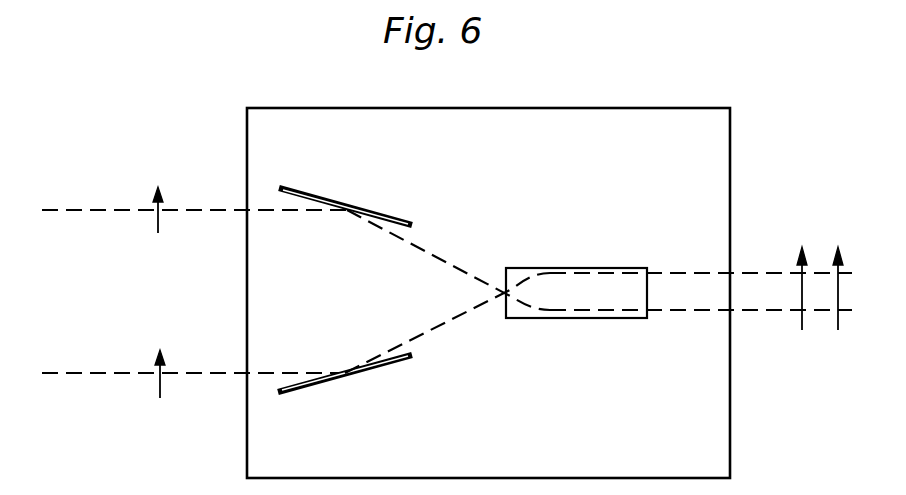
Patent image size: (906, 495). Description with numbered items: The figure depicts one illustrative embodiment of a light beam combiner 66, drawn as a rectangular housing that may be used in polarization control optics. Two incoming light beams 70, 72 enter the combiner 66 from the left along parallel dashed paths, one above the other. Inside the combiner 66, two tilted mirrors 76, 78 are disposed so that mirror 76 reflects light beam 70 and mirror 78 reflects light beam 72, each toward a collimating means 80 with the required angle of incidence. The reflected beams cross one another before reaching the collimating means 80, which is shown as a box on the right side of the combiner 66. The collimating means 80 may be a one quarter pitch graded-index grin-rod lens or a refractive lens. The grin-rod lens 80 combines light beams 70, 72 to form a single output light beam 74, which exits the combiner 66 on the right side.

The light beam combiner 66 is at (578, 108).
The light beam 70 is at (104, 211).
The light beam 72 is at (92, 375).
The light beam 74 is at (772, 313).
The mirror 76 is at (388, 214).
The mirror 78 is at (383, 367).
The collimating means 80 is at (578, 268).